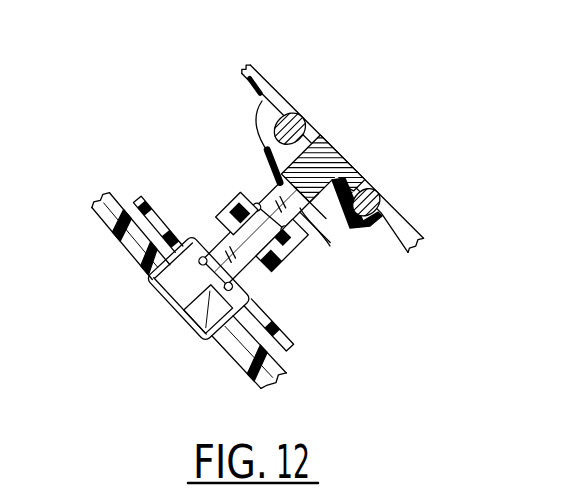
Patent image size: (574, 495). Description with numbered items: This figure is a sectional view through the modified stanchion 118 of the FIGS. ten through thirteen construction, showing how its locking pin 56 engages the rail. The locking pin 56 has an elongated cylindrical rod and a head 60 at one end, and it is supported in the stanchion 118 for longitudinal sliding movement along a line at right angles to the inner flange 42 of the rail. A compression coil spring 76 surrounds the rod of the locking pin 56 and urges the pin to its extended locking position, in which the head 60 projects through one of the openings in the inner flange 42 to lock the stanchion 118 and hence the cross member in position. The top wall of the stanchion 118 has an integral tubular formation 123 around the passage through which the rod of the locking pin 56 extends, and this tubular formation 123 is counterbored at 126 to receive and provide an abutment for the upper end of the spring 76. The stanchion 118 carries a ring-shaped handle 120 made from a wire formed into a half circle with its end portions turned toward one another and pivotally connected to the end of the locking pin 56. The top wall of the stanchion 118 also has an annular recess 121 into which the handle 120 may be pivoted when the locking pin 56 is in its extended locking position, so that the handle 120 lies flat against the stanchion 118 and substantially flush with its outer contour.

The stanchion 118 is at (255, 72).
The annular recess 121 is at (291, 107).
The ring-shaped handle 120 is at (374, 193).
The tubular formation 123 is at (313, 233).
The counterbore 126 is at (238, 210).
The locking pin 56 is at (210, 247).
The compression coil spring 76 is at (294, 252).
The inner flange 42 is at (106, 215).
The head 60 is at (178, 288).